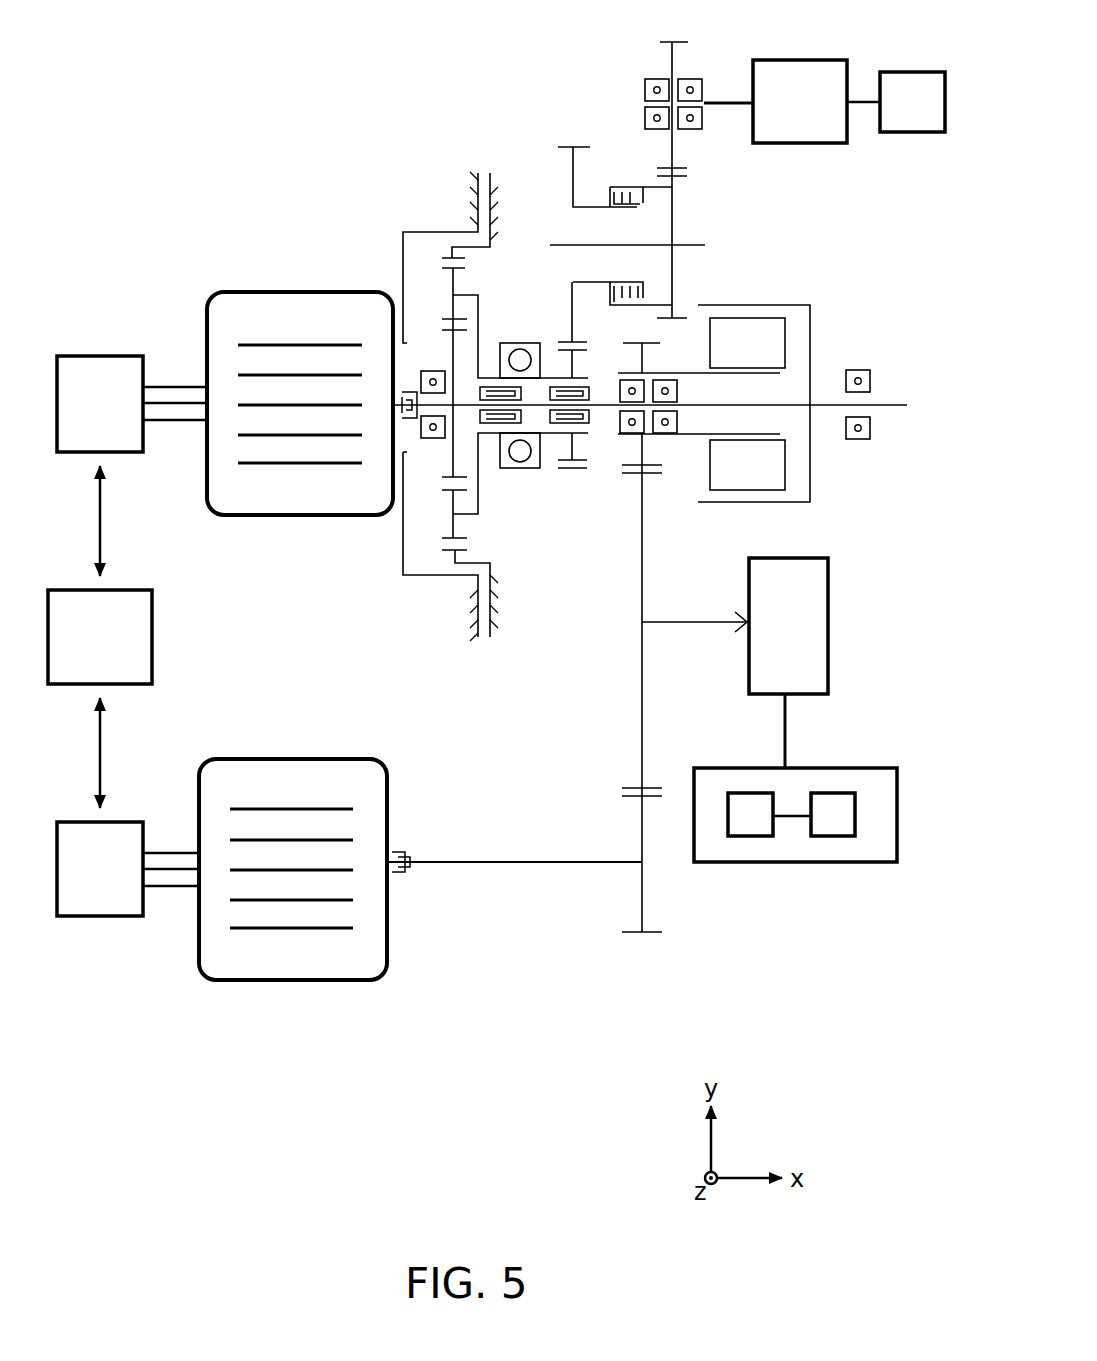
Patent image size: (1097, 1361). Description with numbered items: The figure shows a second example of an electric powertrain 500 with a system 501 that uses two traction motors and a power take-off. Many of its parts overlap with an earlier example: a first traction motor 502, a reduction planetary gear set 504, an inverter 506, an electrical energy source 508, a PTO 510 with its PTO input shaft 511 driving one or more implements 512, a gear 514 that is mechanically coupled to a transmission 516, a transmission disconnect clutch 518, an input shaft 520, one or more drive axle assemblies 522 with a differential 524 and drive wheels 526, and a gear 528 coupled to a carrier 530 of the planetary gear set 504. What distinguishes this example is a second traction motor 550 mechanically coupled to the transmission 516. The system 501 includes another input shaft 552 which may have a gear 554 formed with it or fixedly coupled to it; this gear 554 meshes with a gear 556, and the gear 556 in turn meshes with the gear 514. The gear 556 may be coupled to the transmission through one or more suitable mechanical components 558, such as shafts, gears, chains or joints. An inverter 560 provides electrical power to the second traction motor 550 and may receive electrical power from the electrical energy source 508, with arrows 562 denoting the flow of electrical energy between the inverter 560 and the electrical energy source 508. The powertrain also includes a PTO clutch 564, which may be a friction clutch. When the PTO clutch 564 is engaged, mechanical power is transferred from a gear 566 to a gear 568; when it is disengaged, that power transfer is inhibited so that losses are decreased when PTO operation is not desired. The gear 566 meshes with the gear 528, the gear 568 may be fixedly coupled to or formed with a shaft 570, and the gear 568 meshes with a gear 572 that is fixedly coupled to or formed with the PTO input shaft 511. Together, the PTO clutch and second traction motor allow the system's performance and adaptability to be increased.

The electric powertrain 500 is at (100, 74).
The system 501 is at (184, 136).
The first traction motor 502 is at (333, 292).
The reduction planetary gear set 504 is at (432, 240).
The inverter 506 is at (72, 356).
The electrical energy source 508 is at (152, 611).
The PTO 510 is at (847, 70).
The PTO input shaft 511 is at (723, 102).
The implements 512 is at (930, 133).
The gear 514 is at (645, 445).
The transmission 516 is at (828, 577).
The transmission disconnect clutch 518 is at (810, 276).
The input shaft 520 is at (907, 405).
The drive axle assemblies 522 is at (742, 862).
The differential 524 is at (752, 793).
The drive wheels 526 is at (833, 793).
The gear 528 is at (575, 447).
The carrier 530 is at (478, 514).
The second traction motor 550 is at (338, 759).
The input shaft 552 is at (525, 862).
The gear 554 is at (645, 882).
The gear 556 is at (642, 702).
The mechanical components 558 is at (668, 622).
The inverter 560 is at (125, 916).
The arrows 562 is at (103, 742).
The PTO clutch 564 is at (626, 165).
The gear 566 is at (567, 340).
The gear 568 is at (672, 201).
The shaft 570 is at (617, 245).
The gear 572 is at (672, 62).